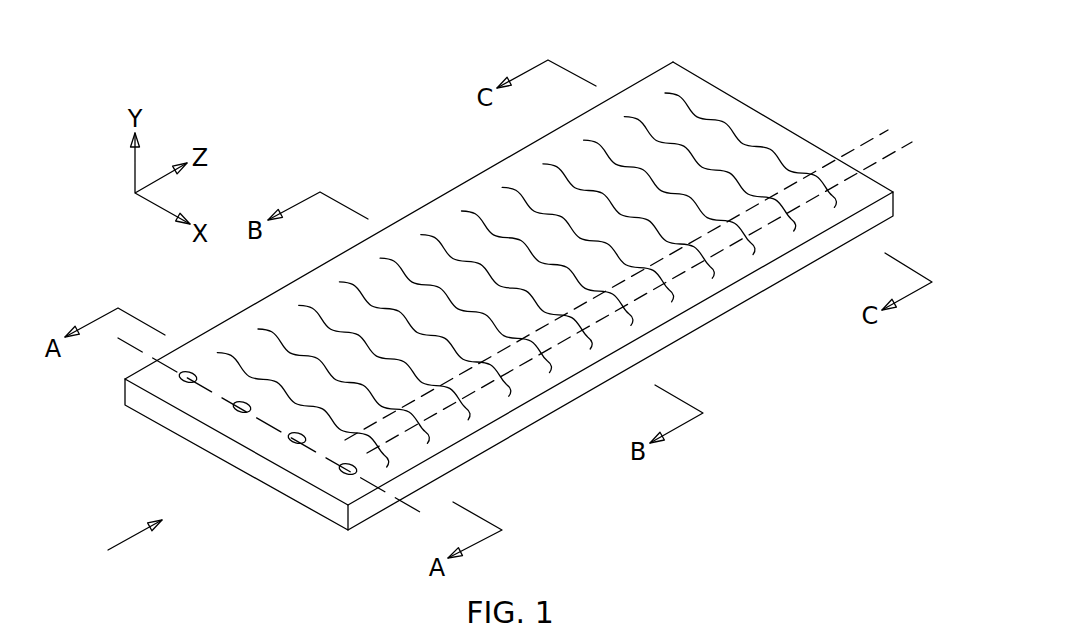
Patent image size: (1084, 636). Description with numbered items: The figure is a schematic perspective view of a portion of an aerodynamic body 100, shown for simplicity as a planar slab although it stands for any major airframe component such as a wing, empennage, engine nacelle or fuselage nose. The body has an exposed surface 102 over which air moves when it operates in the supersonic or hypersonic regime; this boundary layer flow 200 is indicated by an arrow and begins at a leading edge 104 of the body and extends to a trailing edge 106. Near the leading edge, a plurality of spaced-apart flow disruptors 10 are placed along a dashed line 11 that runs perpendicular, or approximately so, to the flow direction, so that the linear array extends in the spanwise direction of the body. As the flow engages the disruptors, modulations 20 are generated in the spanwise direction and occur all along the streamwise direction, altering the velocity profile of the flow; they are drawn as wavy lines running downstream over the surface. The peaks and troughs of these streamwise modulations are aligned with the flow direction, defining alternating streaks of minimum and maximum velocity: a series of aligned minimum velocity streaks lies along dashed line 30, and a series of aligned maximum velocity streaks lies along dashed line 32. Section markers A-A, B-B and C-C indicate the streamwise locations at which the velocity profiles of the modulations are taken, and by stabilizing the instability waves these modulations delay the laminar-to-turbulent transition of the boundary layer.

The aerodynamic body 100 is at (467, 291).
The exposed surface 102 is at (218, 323).
The leading edge 104 is at (125, 398).
The trailing edge 106 is at (733, 97).
The flow disruptors 10 is at (239, 412).
The dashed line 11 is at (418, 509).
The modulations 20 is at (765, 237).
The dashed line 30 is at (893, 152).
The dashed line 32 is at (865, 142).
The supersonic/hypersonic boundary layer flow 200 is at (123, 545).